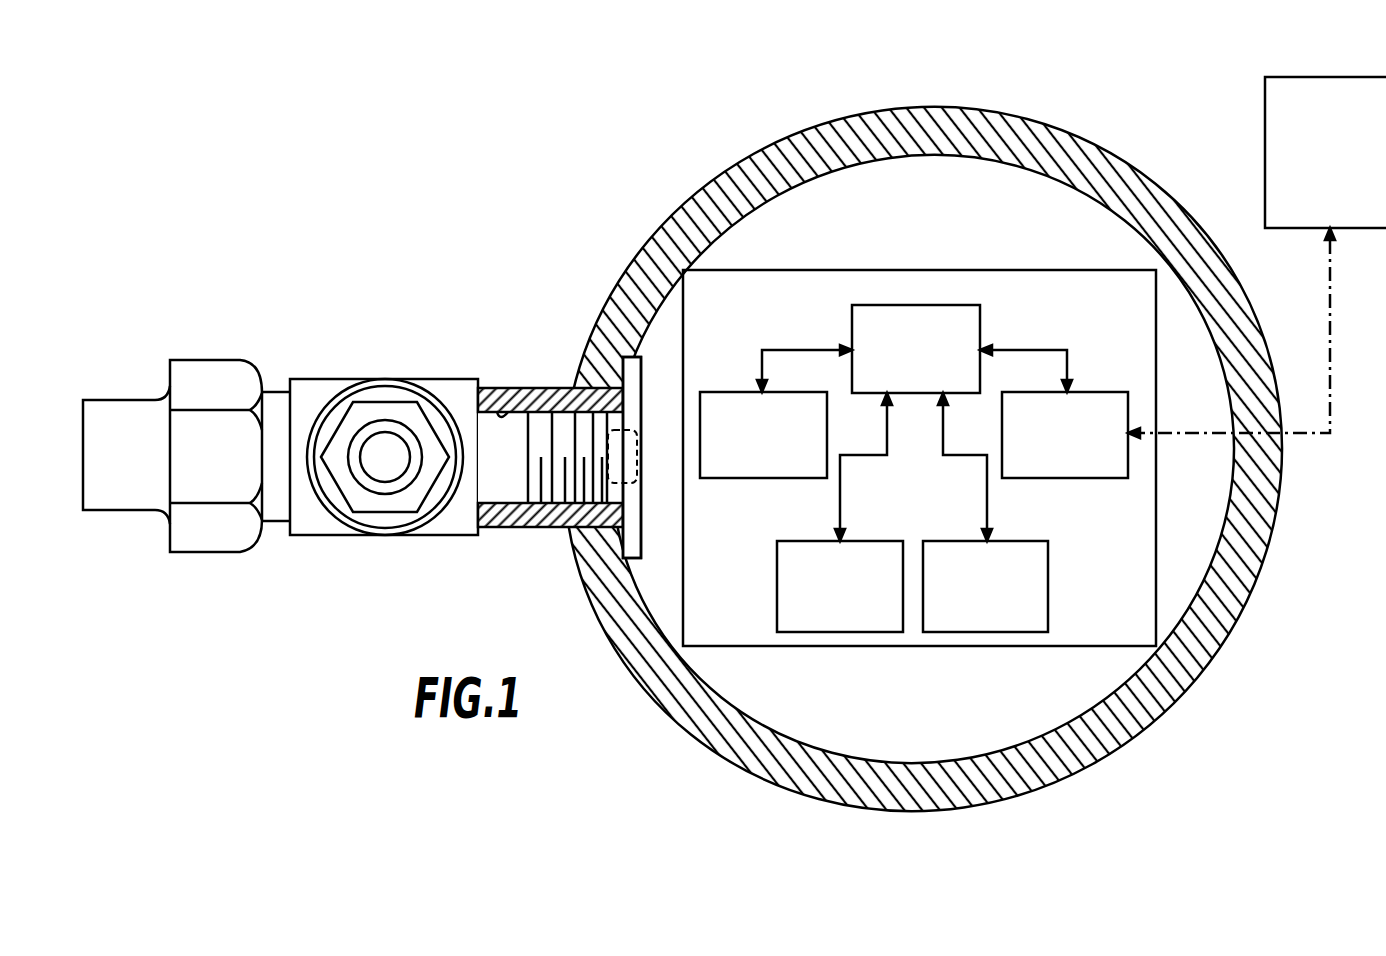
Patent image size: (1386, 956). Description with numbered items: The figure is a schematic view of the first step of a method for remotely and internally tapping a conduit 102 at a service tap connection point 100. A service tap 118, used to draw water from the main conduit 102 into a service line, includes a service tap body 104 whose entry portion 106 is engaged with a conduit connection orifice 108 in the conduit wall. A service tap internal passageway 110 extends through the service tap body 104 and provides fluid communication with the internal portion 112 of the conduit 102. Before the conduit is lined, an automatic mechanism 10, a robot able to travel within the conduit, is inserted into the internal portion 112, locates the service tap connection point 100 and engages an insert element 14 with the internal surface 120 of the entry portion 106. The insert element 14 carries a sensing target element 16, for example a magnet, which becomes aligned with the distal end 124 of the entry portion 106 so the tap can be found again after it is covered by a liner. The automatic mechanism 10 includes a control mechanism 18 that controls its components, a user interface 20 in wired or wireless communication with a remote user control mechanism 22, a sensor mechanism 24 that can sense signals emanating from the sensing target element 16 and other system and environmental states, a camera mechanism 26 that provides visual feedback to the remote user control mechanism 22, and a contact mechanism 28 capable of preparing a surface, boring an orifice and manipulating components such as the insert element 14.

The automatic mechanism 10 is at (1013, 270).
The insert element 14 is at (633, 526).
The sensing target element 16 is at (637, 461).
The control mechanism 18 is at (982, 314).
The user interface 20 is at (1096, 392).
The remote user control mechanism 22 is at (1310, 77).
The sensor mechanism 24 is at (1050, 558).
The camera mechanism 26 is at (777, 572).
The contact mechanism 28 is at (773, 479).
The service tap connection point 100 is at (421, 220).
The conduit 102 is at (962, 117).
The service tap body 104 is at (425, 537).
The entry portion 106 is at (540, 449).
The conduit connection orifice 108 is at (568, 535).
The service tap internal passageway 110 is at (497, 390).
The internal portion 112 is at (975, 208).
The service tap 118 is at (353, 343).
The internal surface 120 is at (527, 388).
The distal end 124 is at (630, 390).